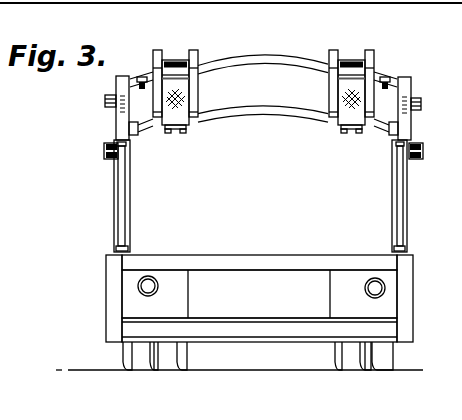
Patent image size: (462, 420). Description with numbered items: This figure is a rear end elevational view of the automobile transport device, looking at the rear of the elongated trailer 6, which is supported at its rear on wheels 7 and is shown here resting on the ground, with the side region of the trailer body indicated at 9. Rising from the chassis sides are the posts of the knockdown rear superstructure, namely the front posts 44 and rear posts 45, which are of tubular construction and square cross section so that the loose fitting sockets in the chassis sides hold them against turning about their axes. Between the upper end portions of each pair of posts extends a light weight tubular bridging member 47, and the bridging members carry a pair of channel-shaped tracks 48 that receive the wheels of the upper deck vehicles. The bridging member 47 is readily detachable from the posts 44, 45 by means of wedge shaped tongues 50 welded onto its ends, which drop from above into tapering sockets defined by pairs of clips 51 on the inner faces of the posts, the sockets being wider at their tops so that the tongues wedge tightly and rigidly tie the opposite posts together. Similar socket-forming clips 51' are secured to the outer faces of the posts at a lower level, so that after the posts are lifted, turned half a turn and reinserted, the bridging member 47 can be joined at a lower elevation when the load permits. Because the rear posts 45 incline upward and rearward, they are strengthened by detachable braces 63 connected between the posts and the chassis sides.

The elongated trailer 6 is at (106, 275).
The wheels 7 is at (124, 353).
The frame end block (right) 9 is at (413, 277).
The front posts 44 is at (117, 116).
The rear posts 45 is at (130, 204).
The bridging members 47 is at (269, 60).
The channel-shaped tracks 48 is at (180, 62).
The wedge shaped tongues 50 is at (138, 136).
The clips 51 is at (264, 79).
The socket-forming clips 51' is at (264, 150).
The braces 63 is at (121, 188).